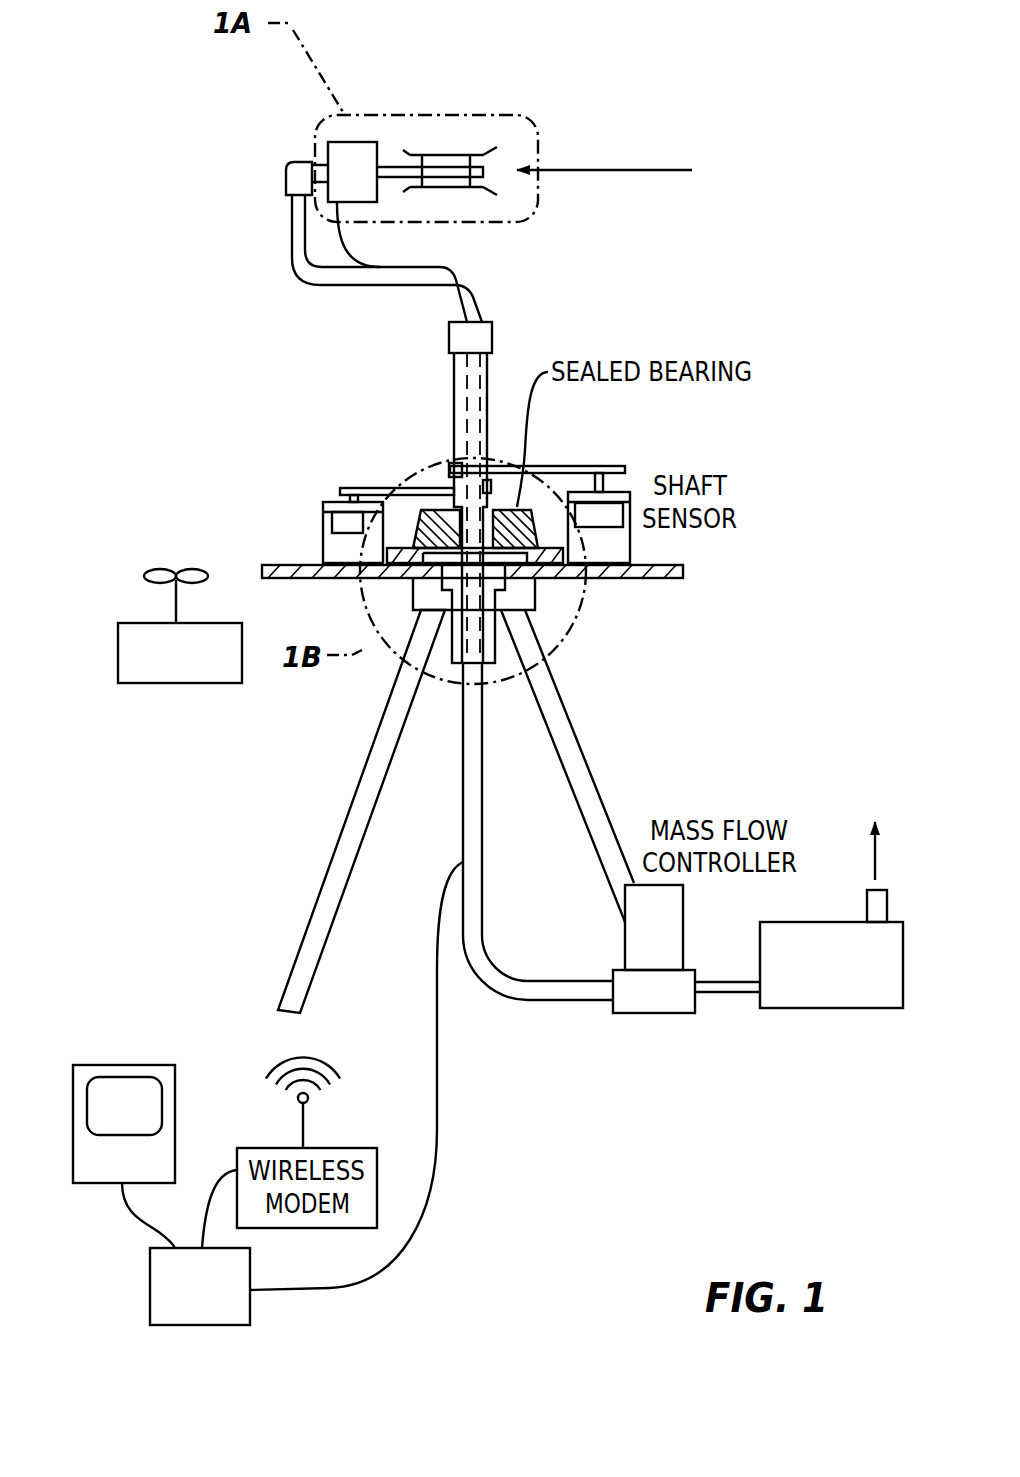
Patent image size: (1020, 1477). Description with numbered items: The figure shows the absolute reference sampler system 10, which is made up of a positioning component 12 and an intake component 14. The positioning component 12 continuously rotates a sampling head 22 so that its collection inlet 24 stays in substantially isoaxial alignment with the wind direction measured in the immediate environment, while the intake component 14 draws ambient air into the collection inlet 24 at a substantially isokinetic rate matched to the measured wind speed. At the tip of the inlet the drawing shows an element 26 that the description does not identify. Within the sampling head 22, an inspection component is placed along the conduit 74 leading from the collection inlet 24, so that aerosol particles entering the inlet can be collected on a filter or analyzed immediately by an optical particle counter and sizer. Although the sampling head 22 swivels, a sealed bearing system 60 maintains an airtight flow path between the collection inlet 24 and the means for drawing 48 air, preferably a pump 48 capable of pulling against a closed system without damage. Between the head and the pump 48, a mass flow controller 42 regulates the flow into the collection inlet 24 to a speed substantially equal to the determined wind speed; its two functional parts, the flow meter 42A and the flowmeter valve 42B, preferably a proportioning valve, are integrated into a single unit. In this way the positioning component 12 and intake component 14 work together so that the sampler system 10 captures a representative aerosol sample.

The absolute reference sampler system 10 is at (696, 97).
The positioning component 12 is at (672, 317).
The intake component 14 is at (719, 776).
The sampling head 22 is at (314, 116).
The collection inlet 24 is at (466, 200).
The sensor tip 26 is at (493, 151).
The conduit 74 is at (297, 278).
The sealed bearing system 60 is at (593, 634).
The mass flow controller 42 is at (592, 938).
The flow meter 42A is at (672, 943).
The flowmeter valve 42B is at (673, 1005).
The pump 48 is at (838, 973).